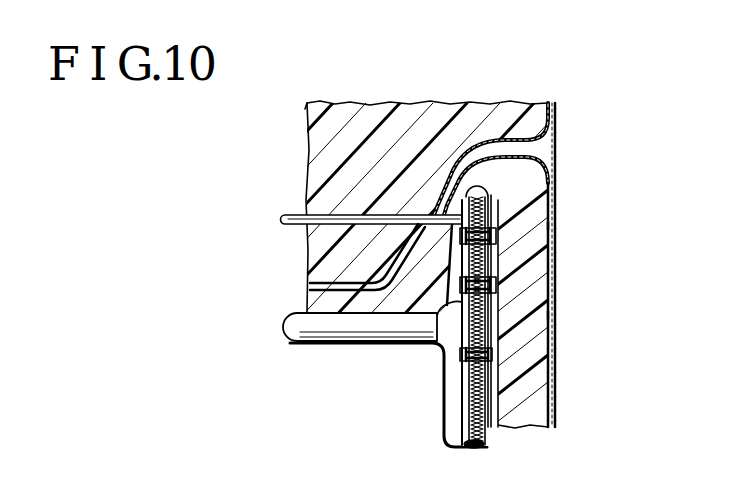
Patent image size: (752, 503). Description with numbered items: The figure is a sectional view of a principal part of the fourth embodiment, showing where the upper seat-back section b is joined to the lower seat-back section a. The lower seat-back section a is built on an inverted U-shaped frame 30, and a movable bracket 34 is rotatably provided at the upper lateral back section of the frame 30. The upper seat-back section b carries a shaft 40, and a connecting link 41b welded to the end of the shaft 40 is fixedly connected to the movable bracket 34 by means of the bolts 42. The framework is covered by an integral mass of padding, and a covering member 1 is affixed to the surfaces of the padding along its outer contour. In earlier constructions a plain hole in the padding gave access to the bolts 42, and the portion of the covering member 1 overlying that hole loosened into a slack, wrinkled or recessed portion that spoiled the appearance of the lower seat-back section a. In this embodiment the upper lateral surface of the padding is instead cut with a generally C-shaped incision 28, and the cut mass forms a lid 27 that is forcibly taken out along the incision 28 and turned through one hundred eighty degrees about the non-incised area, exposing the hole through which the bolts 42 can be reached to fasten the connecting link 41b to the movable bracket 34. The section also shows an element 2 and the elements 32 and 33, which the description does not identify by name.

The covering member 1 is at (553, 375).
The panel outer skin 2 is at (556, 407).
The lid 27 is at (556, 264).
The C-shaped incision 28 is at (549, 226).
The inverted U-shaped frame 30 is at (300, 326).
The nut 32 is at (472, 418).
The bolt 33 is at (472, 380).
The movable bracket 34 is at (549, 194).
The shaft 40 is at (279, 215).
The connecting link 41b is at (450, 312).
The bolts 42 is at (497, 242).
The lower seat-back section a is at (597, 390).
The upper seat-back section b is at (555, 108).